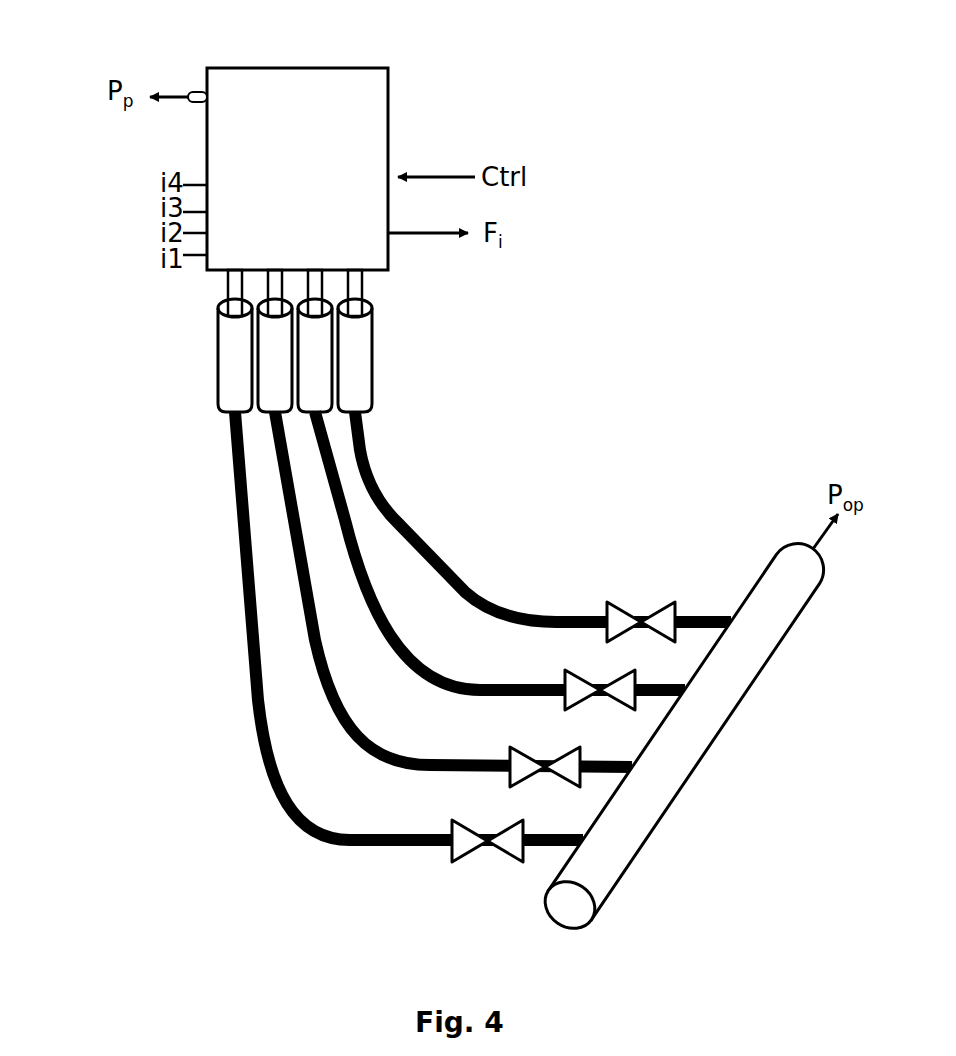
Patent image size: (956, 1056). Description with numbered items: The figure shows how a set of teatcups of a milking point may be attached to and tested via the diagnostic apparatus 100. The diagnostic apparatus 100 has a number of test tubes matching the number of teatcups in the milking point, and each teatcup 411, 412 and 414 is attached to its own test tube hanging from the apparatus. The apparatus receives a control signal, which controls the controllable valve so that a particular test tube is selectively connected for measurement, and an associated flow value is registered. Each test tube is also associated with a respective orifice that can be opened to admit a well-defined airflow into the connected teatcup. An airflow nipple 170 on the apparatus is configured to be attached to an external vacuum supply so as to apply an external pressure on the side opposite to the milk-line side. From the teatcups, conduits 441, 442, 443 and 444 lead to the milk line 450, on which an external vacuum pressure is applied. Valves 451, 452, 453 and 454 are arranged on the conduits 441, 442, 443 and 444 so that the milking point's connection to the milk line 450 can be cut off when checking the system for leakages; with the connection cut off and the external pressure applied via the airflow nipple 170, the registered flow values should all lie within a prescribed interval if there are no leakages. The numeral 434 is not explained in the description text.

The diagnostic apparatus 100 is at (388, 125).
The airflow nipple 170 is at (187, 103).
The teatcup 411 is at (218, 365).
The teatcup 412 is at (273, 395).
The teatcup 414 is at (373, 327).
The third cylinder piston 434 is at (315, 378).
The conduit 441 is at (317, 828).
The conduit 442 is at (332, 710).
The conduit 443 is at (377, 613).
The conduit 444 is at (405, 533).
The milk line 450 is at (773, 560).
The valve 451 is at (500, 850).
The valve 452 is at (510, 783).
The valve 453 is at (565, 705).
The valve 454 is at (652, 612).